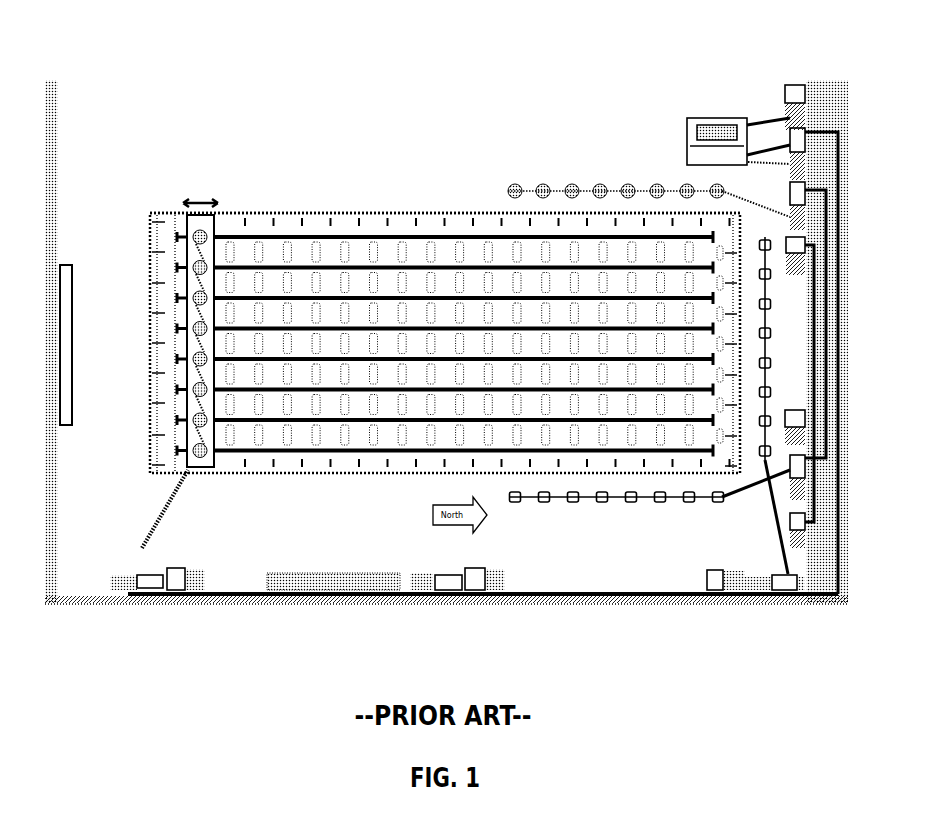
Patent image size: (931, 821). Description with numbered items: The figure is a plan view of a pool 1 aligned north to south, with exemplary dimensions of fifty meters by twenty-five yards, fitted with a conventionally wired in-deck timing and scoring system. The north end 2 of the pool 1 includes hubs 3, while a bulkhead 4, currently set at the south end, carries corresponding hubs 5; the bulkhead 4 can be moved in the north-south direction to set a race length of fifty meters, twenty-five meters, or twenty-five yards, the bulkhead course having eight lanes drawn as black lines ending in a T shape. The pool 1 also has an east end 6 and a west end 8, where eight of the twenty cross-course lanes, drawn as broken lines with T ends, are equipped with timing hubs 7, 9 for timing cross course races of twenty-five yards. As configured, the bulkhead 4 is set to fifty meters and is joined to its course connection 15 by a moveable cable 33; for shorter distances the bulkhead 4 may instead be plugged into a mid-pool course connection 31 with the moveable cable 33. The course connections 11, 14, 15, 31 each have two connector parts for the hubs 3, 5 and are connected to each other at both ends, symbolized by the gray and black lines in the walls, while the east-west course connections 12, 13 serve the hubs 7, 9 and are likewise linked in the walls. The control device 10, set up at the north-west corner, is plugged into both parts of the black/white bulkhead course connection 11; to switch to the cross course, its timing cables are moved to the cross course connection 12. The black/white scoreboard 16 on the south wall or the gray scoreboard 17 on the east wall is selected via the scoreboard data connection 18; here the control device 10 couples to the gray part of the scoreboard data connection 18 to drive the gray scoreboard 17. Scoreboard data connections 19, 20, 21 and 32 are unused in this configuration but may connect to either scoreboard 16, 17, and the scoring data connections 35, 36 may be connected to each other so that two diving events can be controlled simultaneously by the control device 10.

The pool 1 is at (472, 345).
The north end 2 is at (710, 328).
The hubs 3 is at (765, 317).
The bulkhead 4 is at (190, 345).
The hubs 5 is at (198, 308).
The east end 6 is at (547, 462).
The timing hubs 7 is at (607, 497).
The west end 8 is at (510, 188).
The timing hubs 9 is at (541, 230).
The control device 10 is at (722, 132).
The bulkhead course connection 11 is at (792, 130).
The cross course connection 12 is at (791, 190).
The course connection 13 is at (797, 490).
The course connection 14 is at (770, 582).
The course connection 15 is at (145, 582).
The black/white scoreboard 16 is at (63, 425).
The gray scoreboard 17 is at (315, 587).
The scoreboard data connection 18 is at (795, 85).
The scoreboard data connection 19 is at (794, 430).
The scoreboard data connection 20 is at (721, 584).
The scoreboard data connection 21 is at (188, 583).
The mid-pool course connection 31 is at (433, 583).
The scoreboard data connection 32 is at (478, 580).
The moveable cable 33 is at (142, 548).
The scoring data connection 35 is at (790, 573).
The scoring data connection 36 is at (790, 243).